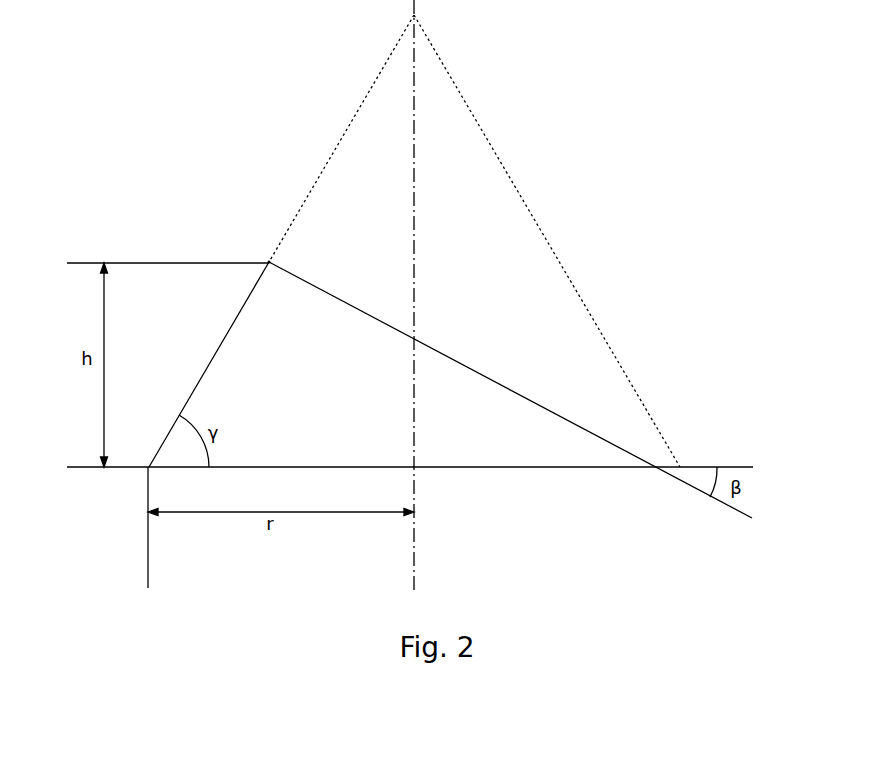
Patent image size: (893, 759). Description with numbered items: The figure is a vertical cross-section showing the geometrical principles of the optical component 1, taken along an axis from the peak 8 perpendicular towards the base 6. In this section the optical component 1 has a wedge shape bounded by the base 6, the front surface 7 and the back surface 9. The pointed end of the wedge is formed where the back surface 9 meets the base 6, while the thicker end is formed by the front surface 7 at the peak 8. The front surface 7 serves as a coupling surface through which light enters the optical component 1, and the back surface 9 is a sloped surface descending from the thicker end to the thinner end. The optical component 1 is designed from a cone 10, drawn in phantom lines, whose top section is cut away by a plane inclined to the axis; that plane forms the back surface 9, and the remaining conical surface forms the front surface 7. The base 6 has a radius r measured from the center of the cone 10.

The optical component 1 is at (272, 185).
The base 6 is at (477, 468).
The front surface 7 is at (207, 367).
The peak 8 is at (269, 262).
The back surface 9 is at (446, 355).
The cone 10 is at (582, 300).